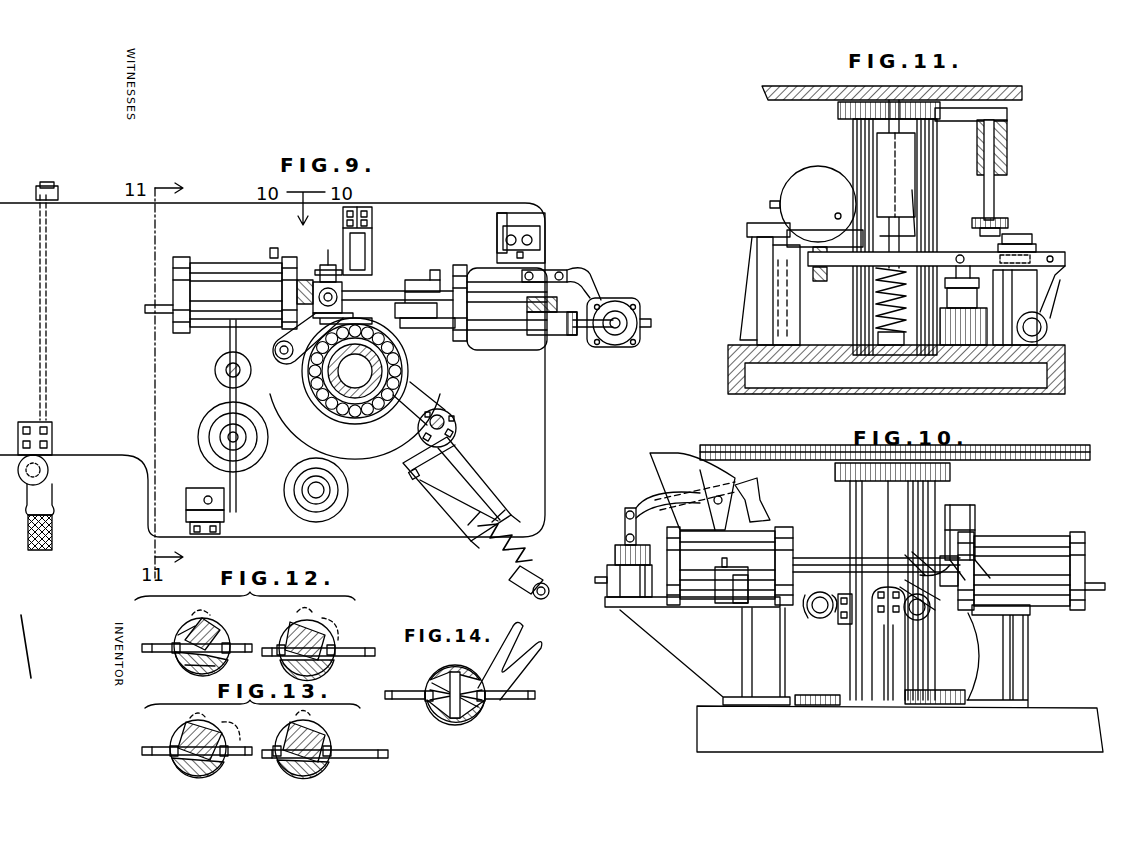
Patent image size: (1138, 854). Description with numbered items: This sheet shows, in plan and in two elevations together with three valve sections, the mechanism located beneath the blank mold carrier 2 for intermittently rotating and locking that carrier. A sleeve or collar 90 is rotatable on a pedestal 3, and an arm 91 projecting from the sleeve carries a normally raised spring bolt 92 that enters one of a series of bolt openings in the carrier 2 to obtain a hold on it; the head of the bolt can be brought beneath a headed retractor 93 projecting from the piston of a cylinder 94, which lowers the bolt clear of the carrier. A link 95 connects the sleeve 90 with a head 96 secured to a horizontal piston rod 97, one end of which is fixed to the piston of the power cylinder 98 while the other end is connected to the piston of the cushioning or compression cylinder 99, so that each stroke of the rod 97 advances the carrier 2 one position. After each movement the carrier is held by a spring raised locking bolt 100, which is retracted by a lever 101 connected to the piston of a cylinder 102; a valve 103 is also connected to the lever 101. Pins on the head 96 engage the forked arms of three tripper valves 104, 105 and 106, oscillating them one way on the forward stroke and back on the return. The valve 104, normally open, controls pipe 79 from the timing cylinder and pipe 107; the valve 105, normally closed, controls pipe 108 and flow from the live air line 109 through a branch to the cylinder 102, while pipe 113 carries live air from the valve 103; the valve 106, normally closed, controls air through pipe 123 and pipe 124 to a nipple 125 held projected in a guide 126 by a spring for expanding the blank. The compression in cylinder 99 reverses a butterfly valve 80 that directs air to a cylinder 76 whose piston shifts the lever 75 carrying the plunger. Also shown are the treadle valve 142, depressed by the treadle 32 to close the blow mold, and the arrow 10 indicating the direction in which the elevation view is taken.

In FIG. 11, the blank mold carrier 2 is at (812, 86).
In FIG. 10, the blank mold carrier 2 is at (739, 450).
In FIG. 9, the pedestal 3 is at (309, 427).
In FIG. 11, the pedestal 3 is at (937, 212).
In FIG. 10, the pedestal 3 is at (936, 677).
In FIG. 9, the arrow 10— 10 is at (398, 533).
In FIG. 11, the arrow 10— 10 is at (790, 362).
In FIG. 10, the arrow 10— 10 is at (898, 740).
In FIG. 9, the treadle 32 is at (52, 533).
In FIG. 9, the lever 75 is at (590, 345).
In FIG. 10, the lever 75 is at (650, 498).
In FIG. 9, the cylinder 76 is at (625, 345).
In FIG. 10, the cylinder 76 is at (628, 608).
In FIG. 12, the pipe 79 is at (154, 642).
In FIG. 9, the reversible butterfly valve 80 is at (546, 240).
In FIG. 10, the reversible butterfly valve 80 is at (730, 610).
In FIG. 9, the sleeve or collar 90 is at (408, 378).
In FIG. 11, the sleeve or collar 90 is at (963, 128).
In FIG. 10, the sleeve or collar 90 is at (951, 476).
In FIG. 9, the arm 91 is at (445, 413).
In FIG. 11, the arm 91 is at (1008, 118).
In FIG. 9, the spring bolt 92 is at (456, 433).
In FIG. 11, the spring bolt 92 is at (996, 190).
In FIG. 9, the retractor 93 is at (325, 488).
In FIG. 11, the retractor 93 is at (1034, 240).
In FIG. 9, the cylinder 94 is at (342, 503).
In FIG. 11, the cylinder 94 is at (1030, 290).
In FIG. 9, the link 95 is at (302, 312).
In FIG. 10, the link 95 is at (950, 548).
In FIG. 9, the head 96 is at (317, 282).
In FIG. 9, the horizontal piston rod 97 is at (391, 290).
In FIG. 10, the horizontal piston rod 97 is at (818, 548).
In FIG. 9, the power cylinder 98 is at (240, 272).
In FIG. 11, the power cylinder 98 is at (782, 190).
In FIG. 10, the power cylinder 98 is at (1055, 535).
In FIG. 9, the cushioning or compression cylinder 99 is at (508, 350).
In FIG. 10, the cushioning or compression cylinder 99 is at (700, 610).
In FIG. 9, the locking bolt 100 is at (224, 371).
In FIG. 11, the locking bolt 100 is at (878, 130).
In FIG. 9, the lever 101 is at (228, 397).
In FIG. 11, the lever 101 is at (955, 254).
In FIG. 9, the cylinder 102 is at (212, 437).
In FIG. 11, the cylinder 102 is at (968, 335).
In FIG. 9, the valve 103 is at (203, 492).
In FIG. 11, the valve 103 is at (1048, 328).
In FIG. 9, the tripper valve 104 is at (365, 270).
In FIG. 10, the tripper valve 104 is at (930, 620).
In FIG. 12, the tripper valve 104 is at (316, 622).
In FIG. 9, the tripper valve 105 is at (440, 330).
In FIG. 10, the tripper valve 105 is at (820, 618).
In FIG. 13, the tripper valve 105 is at (178, 760).
In FIG. 9, the tripper valve 106 is at (372, 243).
In FIG. 11, the tripper valve 106 is at (745, 243).
In FIG. 10, the tripper valve 106 is at (890, 603).
In FIG. 14, the tripper valve 106 is at (485, 718).
In FIG. 12, the pipe 107 is at (348, 648).
In FIG. 12, the pipe 108 is at (272, 645).
In FIG. 13, the live air line 109 is at (162, 748).
In FIG. 13, the pipe 113 is at (370, 760).
In FIG. 14, the pipe 123 is at (530, 700).
In FIG. 9, the pipe 124 is at (548, 592).
In FIG. 14, the pipe 124 is at (410, 691).
In FIG. 9, the nipple 125 is at (520, 518).
In FIG. 9, the guide 126 is at (475, 530).
In FIG. 9, the treadle valve 142 is at (48, 472).